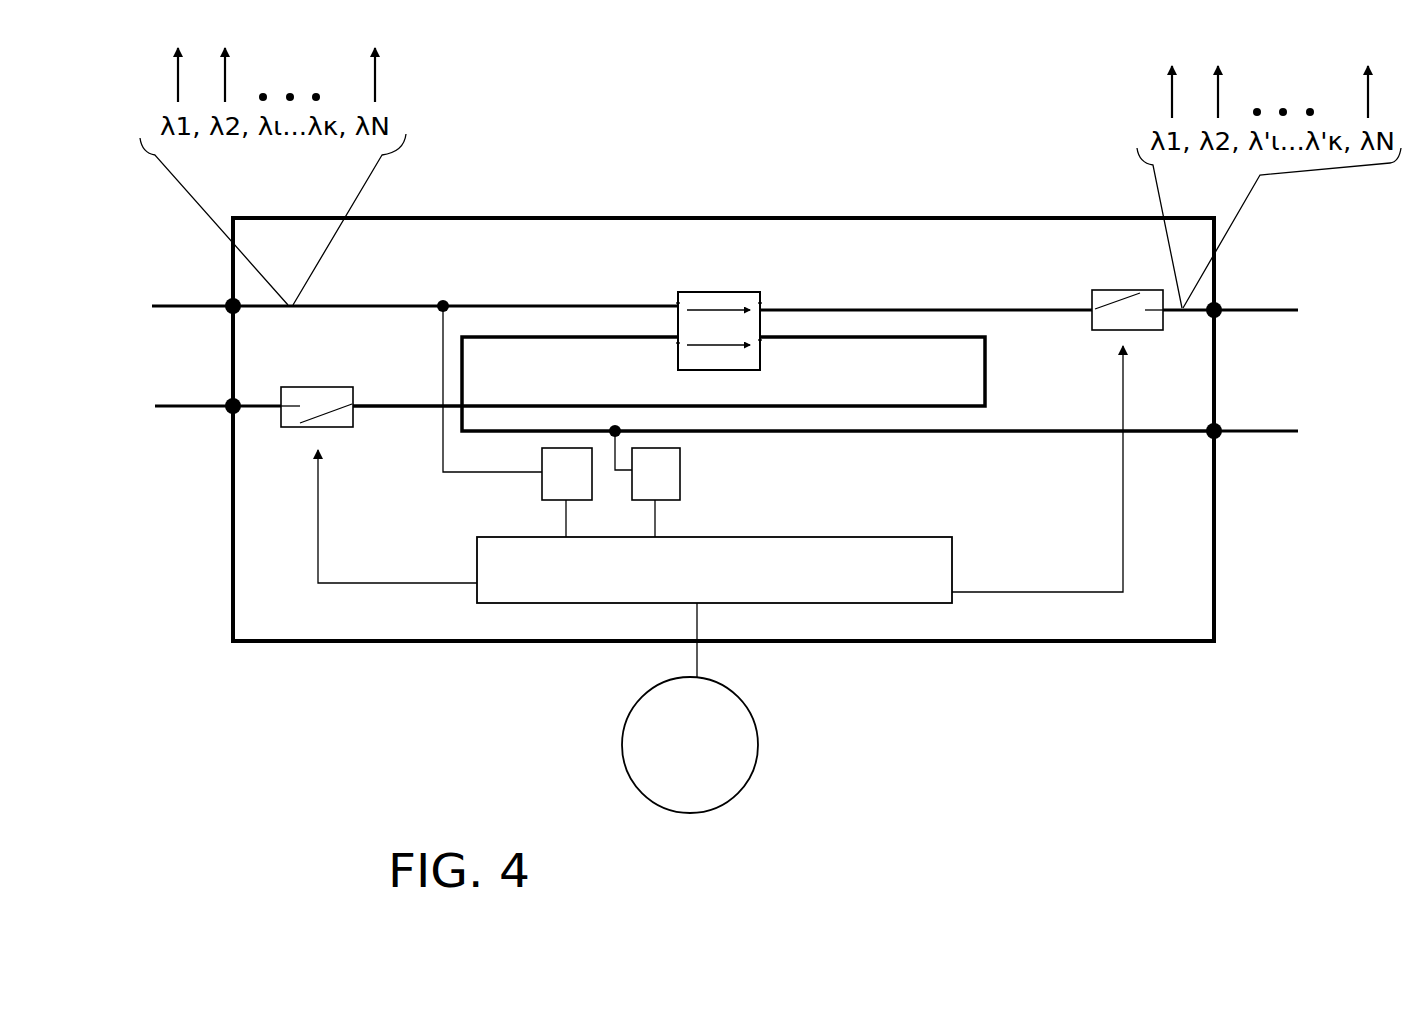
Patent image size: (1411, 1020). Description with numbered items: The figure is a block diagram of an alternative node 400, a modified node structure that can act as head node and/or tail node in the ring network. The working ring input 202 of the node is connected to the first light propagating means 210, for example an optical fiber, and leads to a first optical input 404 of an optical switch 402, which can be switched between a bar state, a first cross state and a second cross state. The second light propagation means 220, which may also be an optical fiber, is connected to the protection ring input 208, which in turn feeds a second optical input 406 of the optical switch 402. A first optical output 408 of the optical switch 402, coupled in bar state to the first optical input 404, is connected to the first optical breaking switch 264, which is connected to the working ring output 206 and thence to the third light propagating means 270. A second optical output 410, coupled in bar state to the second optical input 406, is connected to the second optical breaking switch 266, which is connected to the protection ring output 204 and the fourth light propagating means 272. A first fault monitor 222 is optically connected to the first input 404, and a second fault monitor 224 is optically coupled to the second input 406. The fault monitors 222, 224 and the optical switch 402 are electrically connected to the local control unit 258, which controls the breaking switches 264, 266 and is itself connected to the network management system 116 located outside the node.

The network management system 116 is at (762, 742).
The working ring input 202 is at (228, 302).
The protection ring output 204 is at (228, 402).
The working ring output 206 is at (1220, 305).
The protection ring input 208 is at (1220, 440).
The first light propagating means 210 is at (172, 305).
The second light propagation means 220 is at (1270, 437).
The first fault monitor 222 is at (567, 474).
The second fault monitor 224 is at (656, 474).
The local control unit 258 is at (714, 570).
The first optical breaking switch 264 is at (1118, 290).
The second optical breaking switch 266 is at (330, 386).
The third light propagating means 270 is at (1268, 308).
The fourth light propagating means 272 is at (180, 405).
The alternative node 400 is at (1030, 673).
The optical switch 402 is at (719, 331).
The first optical input 404 is at (677, 302).
The second optical input 406 is at (677, 343).
The first optical output 408 is at (762, 302).
The second optical output 410 is at (762, 340).